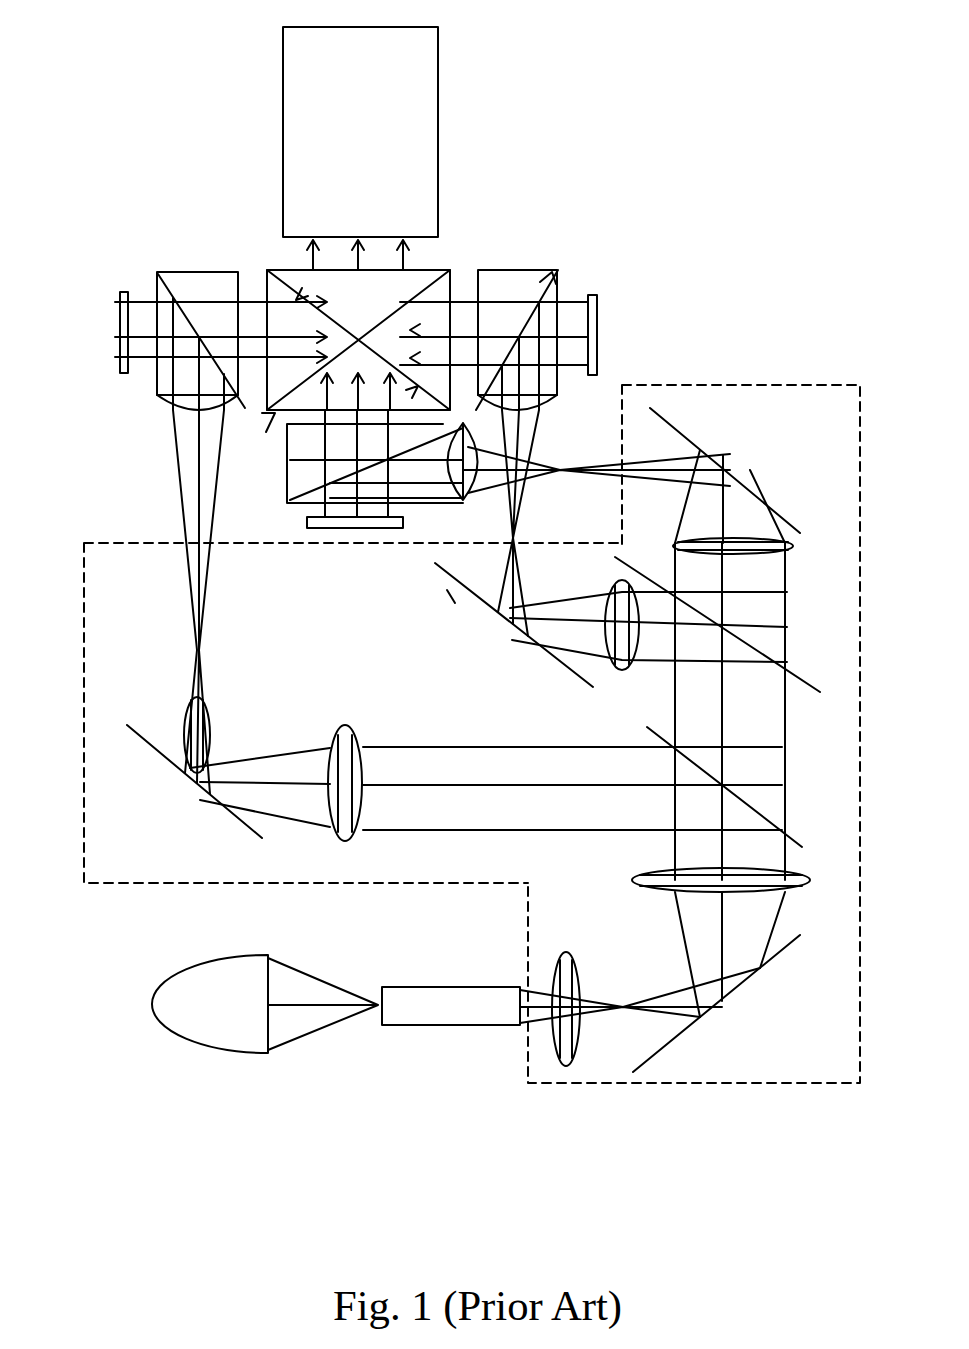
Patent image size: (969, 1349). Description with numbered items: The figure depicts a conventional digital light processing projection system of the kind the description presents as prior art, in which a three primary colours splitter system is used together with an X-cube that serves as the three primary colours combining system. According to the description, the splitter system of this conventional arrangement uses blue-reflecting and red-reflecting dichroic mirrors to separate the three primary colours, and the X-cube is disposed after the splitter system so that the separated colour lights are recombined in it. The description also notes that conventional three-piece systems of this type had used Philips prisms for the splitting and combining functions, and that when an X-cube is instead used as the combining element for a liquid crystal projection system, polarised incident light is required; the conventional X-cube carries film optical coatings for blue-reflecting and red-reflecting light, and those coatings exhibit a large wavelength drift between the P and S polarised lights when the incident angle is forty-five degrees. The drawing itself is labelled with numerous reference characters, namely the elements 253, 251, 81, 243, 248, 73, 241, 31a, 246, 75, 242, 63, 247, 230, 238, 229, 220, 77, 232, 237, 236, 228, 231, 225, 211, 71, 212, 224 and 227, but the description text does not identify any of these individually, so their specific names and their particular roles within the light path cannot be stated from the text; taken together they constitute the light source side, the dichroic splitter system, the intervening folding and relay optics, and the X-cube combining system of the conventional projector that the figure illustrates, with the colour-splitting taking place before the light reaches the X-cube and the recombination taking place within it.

The image detector 253 is at (438, 153).
The beam splitter output beams 251 is at (430, 256).
The beam splitter cube 81 is at (287, 273).
The left reflecting module 243 is at (183, 270).
The left filter plate 248 is at (120, 330).
The first light beam 73 is at (215, 270).
The right reflecting module 241 is at (530, 270).
The mirror surface 31a is at (557, 285).
The right filter plate 246 is at (600, 325).
The second light beam 75 is at (462, 332).
The sample stage 242 is at (307, 513).
The sample 63 is at (265, 388).
The imaging lens 247 is at (425, 505).
The mirror 230 is at (690, 440).
The lens 238 is at (775, 557).
The mirror 229 is at (453, 597).
The illumination unit 220 is at (705, 1083).
The third light beam 77 is at (455, 600).
The mirror 232 is at (640, 567).
The lens 237 is at (620, 672).
The lens 236 is at (343, 725).
The mirror 228 is at (150, 745).
The mirror 231 is at (655, 735).
The lens 225 is at (650, 870).
The light source lamp 211 is at (188, 968).
The light beam 71 is at (313, 976).
The light guide rod 212 is at (430, 987).
The lens 224 is at (560, 952).
The mirror 227 is at (690, 1030).